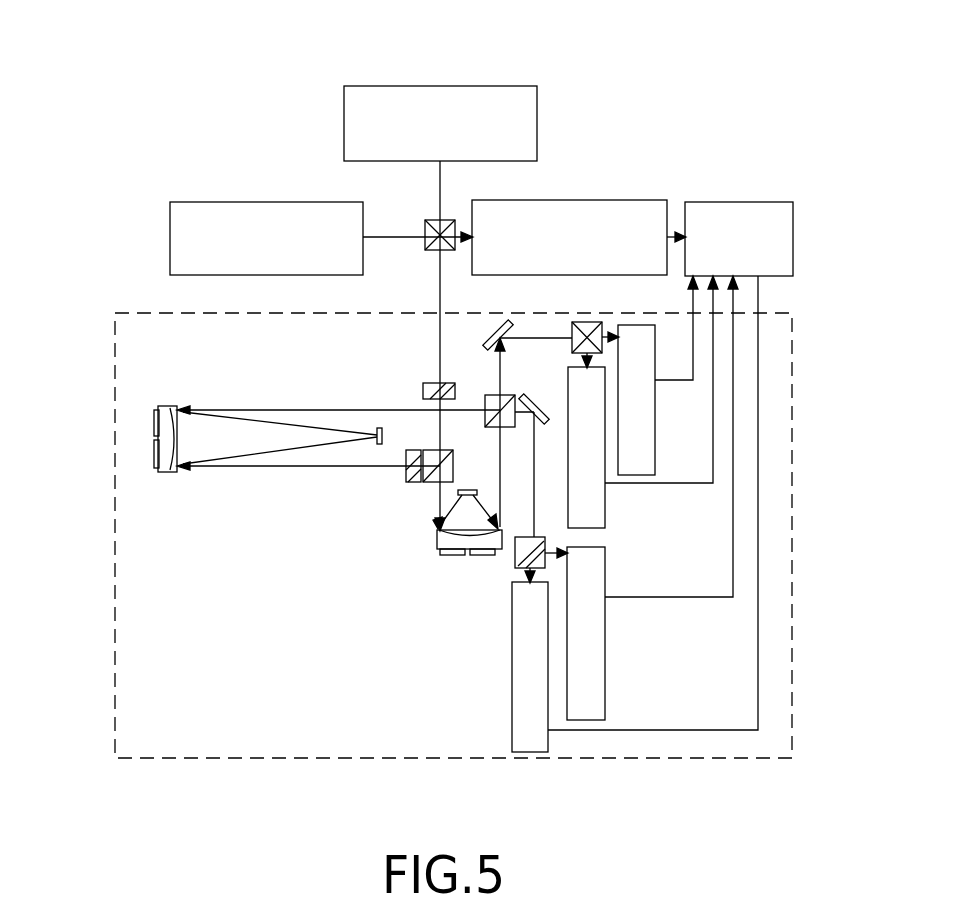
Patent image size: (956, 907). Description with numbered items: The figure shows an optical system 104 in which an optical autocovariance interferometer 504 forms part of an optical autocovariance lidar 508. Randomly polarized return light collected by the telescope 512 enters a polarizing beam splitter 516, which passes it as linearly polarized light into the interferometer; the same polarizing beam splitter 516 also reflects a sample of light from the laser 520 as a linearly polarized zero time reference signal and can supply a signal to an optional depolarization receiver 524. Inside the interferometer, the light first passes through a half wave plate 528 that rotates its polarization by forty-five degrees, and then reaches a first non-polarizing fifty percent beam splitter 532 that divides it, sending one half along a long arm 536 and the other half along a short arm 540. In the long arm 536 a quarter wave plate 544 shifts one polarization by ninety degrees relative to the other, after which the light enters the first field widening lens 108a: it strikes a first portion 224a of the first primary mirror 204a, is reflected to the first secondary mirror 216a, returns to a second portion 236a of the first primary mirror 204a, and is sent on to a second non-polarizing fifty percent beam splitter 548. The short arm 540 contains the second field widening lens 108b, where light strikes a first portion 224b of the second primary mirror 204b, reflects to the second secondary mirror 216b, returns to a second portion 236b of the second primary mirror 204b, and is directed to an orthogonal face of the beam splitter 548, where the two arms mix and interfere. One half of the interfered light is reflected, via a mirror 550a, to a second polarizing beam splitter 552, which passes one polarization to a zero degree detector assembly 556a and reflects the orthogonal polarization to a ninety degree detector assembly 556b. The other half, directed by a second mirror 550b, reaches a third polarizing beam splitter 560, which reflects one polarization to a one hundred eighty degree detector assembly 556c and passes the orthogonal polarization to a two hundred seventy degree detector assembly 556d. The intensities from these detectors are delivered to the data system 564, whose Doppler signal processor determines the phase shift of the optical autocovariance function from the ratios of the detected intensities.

The optical system 104 is at (274, 163).
The optical autocovariance lidar 508 is at (423, 77).
The telescope 512 is at (490, 86).
The laser 520 is at (170, 237).
The polarizing beam splitter 516 is at (444, 251).
The depolarization receiver 524 is at (642, 200).
The data system 564 is at (725, 202).
The optical autocovariance interferometer 504 is at (160, 313).
The first field widening lens 108a is at (283, 397).
The first primary mirror 204a is at (166, 473).
The second portion of the first primary mirror 236a is at (155, 416).
The first portion of the first primary mirror 224a is at (155, 452).
The long arm 536 is at (300, 474).
The first secondary mirror 216a is at (378, 447).
The half wave plate 528 is at (423, 391).
The quarter wave plate 544 is at (411, 482).
The first non-polarizing 50% beam splitter 532 is at (432, 484).
The second field widening lens 108b is at (464, 558).
The second secondary mirror 216b is at (470, 490).
The second primary mirror 204b is at (437, 549).
The first portion of the second primary mirror 224b is at (456, 556).
The second portion of the second primary mirror 236b is at (484, 557).
The short arm 540 is at (441, 556).
The second non-polarizing 50% beam splitter 548 is at (485, 395).
The mirror 550a is at (476, 333).
The second mirror 550b is at (540, 392).
The second polarizing beam splitter 552 is at (583, 322).
The 0° detector assembly 556a is at (646, 325).
The 90° detector assembly 556b is at (605, 512).
The 180° detector assembly 556c is at (606, 618).
The 270° detector assembly 556d is at (549, 730).
The third polarizing beam splitter 560 is at (532, 537).